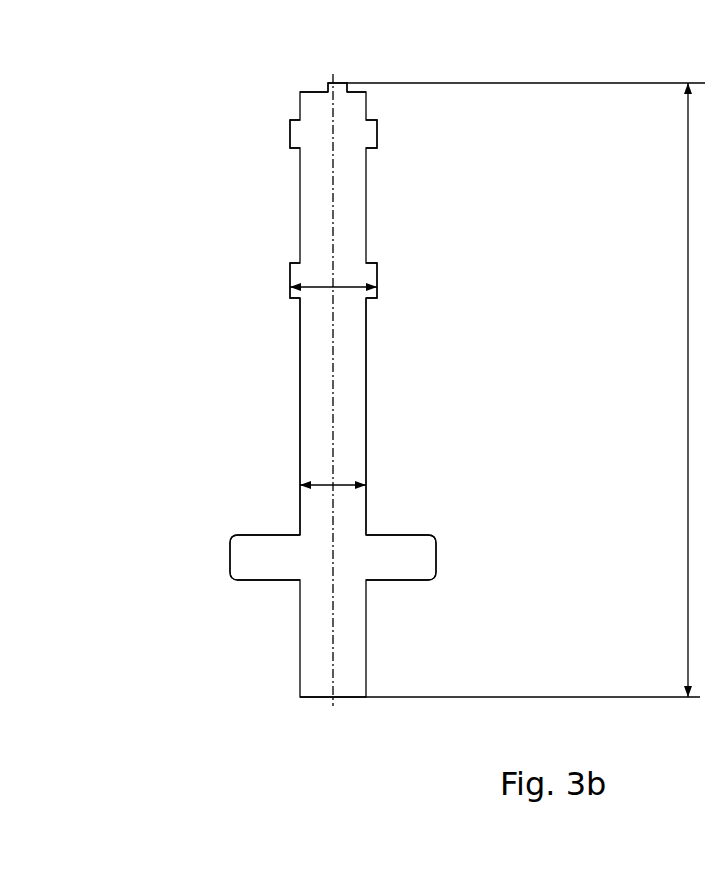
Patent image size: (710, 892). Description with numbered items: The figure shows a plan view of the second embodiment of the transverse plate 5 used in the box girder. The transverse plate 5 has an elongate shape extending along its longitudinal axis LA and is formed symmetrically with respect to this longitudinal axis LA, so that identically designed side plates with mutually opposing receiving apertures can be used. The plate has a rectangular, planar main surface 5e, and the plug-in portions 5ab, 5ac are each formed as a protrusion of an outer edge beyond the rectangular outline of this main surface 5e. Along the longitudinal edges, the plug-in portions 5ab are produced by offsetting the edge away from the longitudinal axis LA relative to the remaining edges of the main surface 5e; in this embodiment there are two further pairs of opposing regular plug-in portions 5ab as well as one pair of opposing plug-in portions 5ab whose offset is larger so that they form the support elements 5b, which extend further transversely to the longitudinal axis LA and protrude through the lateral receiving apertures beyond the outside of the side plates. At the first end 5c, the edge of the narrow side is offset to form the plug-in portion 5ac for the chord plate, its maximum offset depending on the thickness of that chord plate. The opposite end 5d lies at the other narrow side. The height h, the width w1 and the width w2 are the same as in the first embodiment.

The transverse plate 5 is at (455, 148).
The first end 5c is at (284, 82).
The plug-in portion 5ac is at (324, 90).
The plug-in portion 5ab is at (295, 134).
The support element 5b is at (266, 557).
The main surface 5e is at (350, 433).
The pin base end 5d is at (293, 712).
The longitudinal axis LA is at (337, 357).
The width w1 is at (318, 482).
The width w2 is at (318, 296).
The height h is at (528, 390).